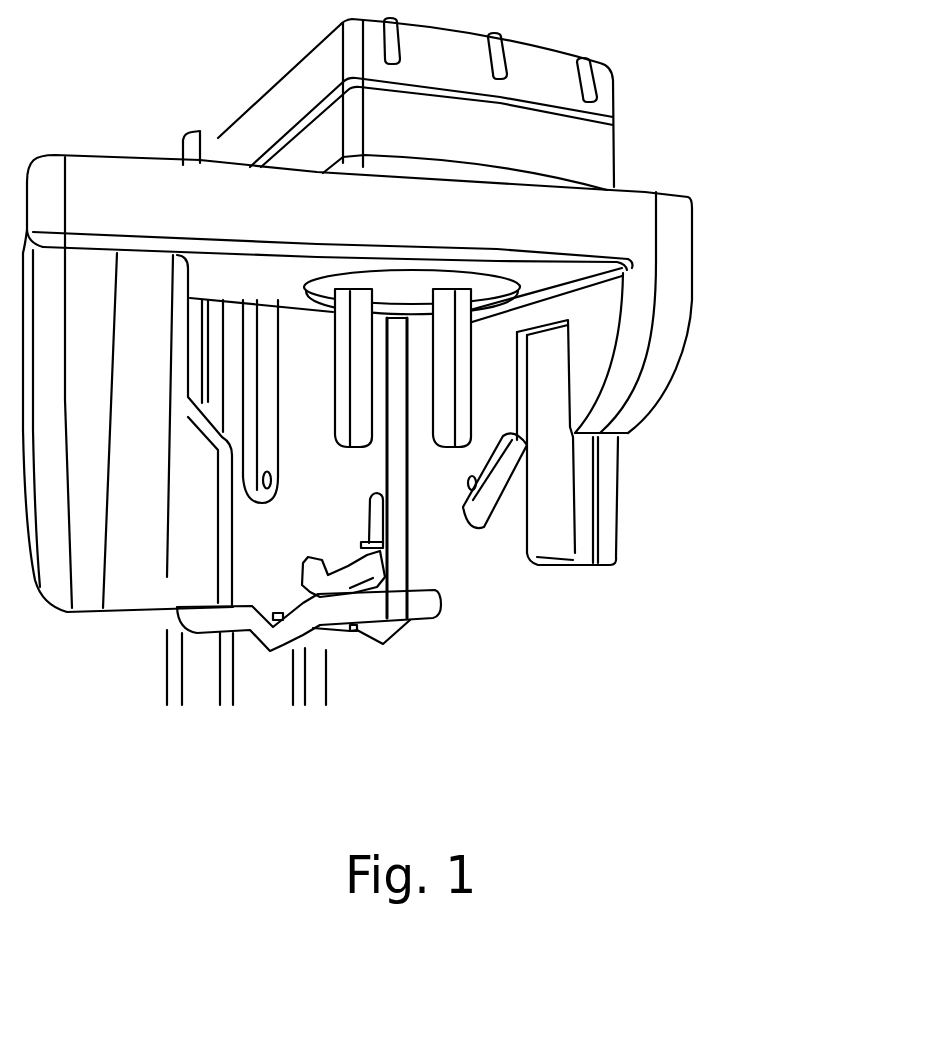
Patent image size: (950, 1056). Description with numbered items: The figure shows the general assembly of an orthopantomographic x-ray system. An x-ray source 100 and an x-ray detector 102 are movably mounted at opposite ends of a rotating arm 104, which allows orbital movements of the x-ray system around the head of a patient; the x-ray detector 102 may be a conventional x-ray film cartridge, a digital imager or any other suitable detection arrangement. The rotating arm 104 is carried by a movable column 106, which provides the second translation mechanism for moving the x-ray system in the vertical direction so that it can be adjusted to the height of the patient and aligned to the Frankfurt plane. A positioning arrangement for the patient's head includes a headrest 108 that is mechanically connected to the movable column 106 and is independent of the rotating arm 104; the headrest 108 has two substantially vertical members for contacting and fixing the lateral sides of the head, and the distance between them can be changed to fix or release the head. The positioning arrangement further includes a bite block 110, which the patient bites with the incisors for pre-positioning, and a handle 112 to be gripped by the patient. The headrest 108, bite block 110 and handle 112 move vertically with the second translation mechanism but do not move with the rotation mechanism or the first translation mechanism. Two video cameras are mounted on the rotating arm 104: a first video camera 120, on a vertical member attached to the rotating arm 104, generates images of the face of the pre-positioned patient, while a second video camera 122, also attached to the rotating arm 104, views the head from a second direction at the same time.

The x-ray source 100 is at (84, 608).
The x-ray detector 102 is at (612, 516).
The rotating arm 104 is at (640, 184).
The movable column 106 is at (197, 700).
The headrest 108 is at (620, 270).
The bite block 110 is at (381, 518).
The handle 112 is at (428, 619).
The video camera 1 120 is at (273, 477).
The video camera 2 122 is at (478, 487).